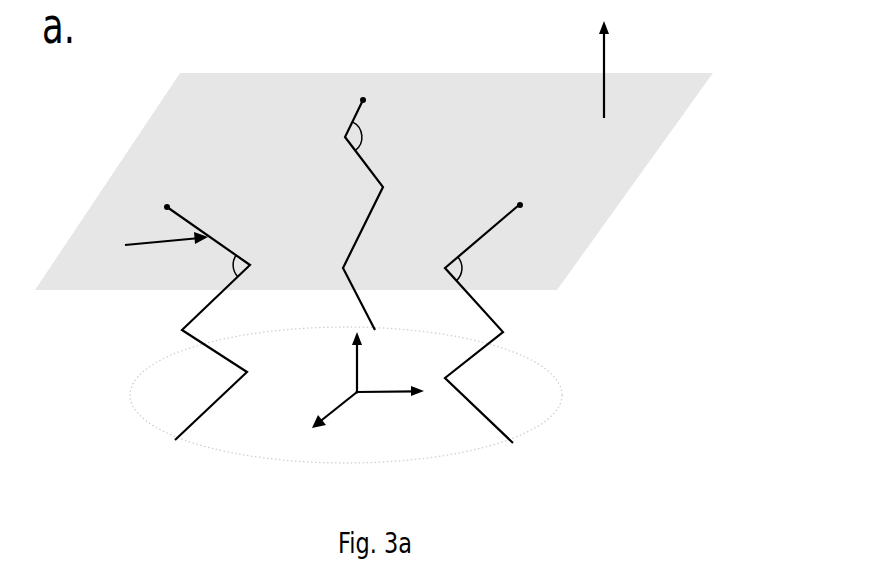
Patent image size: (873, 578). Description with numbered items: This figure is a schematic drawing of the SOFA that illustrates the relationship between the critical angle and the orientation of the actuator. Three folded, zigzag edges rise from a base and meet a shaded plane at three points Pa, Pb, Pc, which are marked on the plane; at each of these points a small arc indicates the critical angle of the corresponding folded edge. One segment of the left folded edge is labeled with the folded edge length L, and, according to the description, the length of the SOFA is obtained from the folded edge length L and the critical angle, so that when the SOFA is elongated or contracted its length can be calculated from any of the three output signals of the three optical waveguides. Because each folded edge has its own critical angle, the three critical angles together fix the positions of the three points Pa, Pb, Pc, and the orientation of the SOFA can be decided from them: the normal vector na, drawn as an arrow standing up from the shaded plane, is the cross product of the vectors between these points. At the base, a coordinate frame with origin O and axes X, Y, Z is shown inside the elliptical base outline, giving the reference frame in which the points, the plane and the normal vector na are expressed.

The point Pa is at (366, 78).
The point Pb is at (146, 207).
The point Pc is at (542, 205).
The folded edge length L is at (143, 243).
The normal vector na is at (632, 73).
The origin O is at (359, 419).
The X axis X is at (317, 426).
The Y axis Y is at (401, 416).
The Z axis Z is at (338, 360).